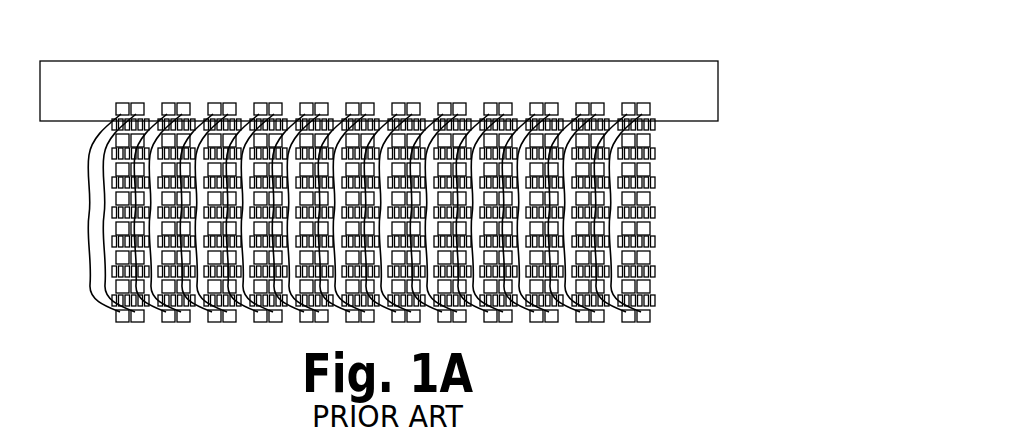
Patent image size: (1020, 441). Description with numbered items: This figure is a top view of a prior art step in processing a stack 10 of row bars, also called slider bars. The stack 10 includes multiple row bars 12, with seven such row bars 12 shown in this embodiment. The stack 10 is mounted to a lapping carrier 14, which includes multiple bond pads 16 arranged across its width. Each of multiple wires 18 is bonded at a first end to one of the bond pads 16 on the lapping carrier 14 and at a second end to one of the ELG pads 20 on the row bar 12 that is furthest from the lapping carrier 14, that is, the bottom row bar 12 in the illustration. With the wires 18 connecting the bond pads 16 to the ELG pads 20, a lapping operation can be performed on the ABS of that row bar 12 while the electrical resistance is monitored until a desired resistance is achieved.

The stack 10 is at (441, 199).
The row bar 12 is at (440, 247).
The lapping carrier 14 is at (695, 86).
The bond pad 16 is at (642, 110).
The wire 18 is at (651, 140).
The ELG pad 20 is at (598, 325).